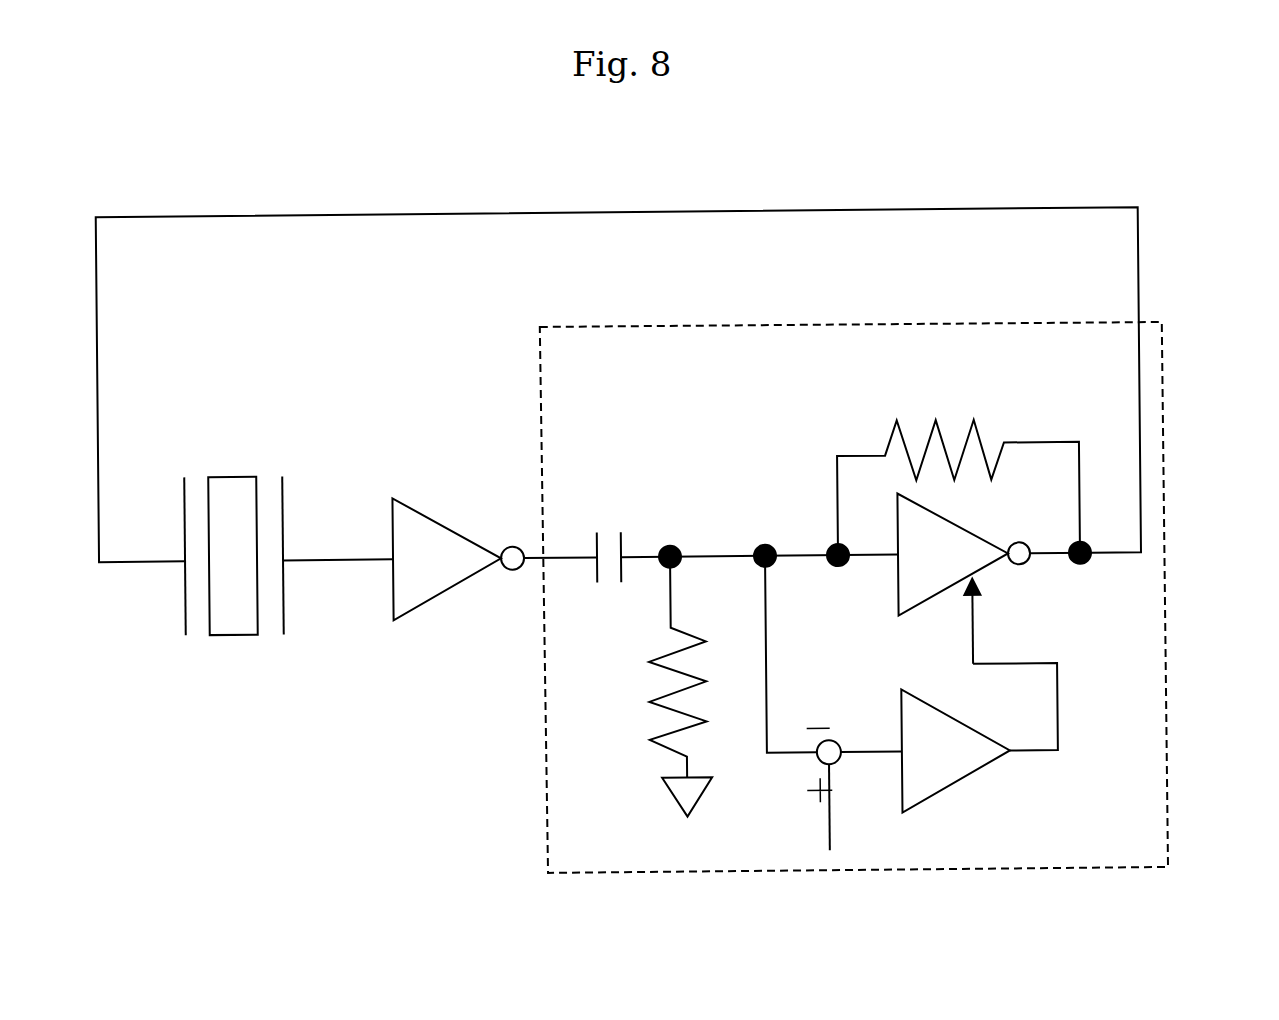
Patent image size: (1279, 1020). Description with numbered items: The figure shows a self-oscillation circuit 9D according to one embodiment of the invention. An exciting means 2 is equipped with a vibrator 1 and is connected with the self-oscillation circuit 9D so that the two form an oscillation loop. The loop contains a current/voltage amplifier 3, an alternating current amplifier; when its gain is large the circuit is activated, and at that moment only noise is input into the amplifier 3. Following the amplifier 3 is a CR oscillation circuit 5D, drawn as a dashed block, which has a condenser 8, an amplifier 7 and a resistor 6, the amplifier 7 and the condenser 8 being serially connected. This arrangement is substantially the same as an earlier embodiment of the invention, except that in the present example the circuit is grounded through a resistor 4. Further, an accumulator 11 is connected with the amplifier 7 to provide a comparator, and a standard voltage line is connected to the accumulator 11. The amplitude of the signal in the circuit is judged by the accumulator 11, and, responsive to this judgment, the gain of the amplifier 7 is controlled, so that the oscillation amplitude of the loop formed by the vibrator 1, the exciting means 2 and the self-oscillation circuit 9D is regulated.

The vibrator 1 is at (229, 477).
The exciting means 2 is at (185, 501).
The current/voltage amplifier 3 is at (439, 533).
The resistor 4 is at (660, 650).
The resistor 6 is at (923, 418).
The amplifier 7 is at (969, 548).
The condenser 8 is at (597, 535).
The accumulator 11 is at (964, 738).
The self-oscillation circuit 9D is at (1155, 205).
The CR oscillation circuit 5D is at (1165, 400).